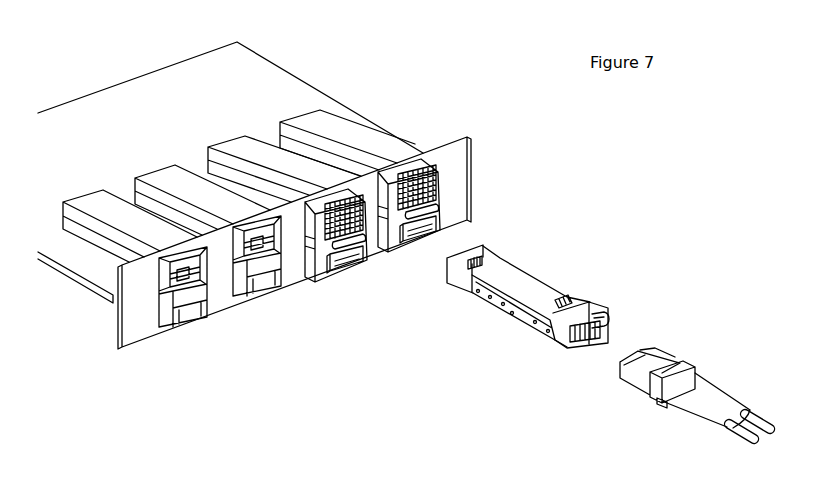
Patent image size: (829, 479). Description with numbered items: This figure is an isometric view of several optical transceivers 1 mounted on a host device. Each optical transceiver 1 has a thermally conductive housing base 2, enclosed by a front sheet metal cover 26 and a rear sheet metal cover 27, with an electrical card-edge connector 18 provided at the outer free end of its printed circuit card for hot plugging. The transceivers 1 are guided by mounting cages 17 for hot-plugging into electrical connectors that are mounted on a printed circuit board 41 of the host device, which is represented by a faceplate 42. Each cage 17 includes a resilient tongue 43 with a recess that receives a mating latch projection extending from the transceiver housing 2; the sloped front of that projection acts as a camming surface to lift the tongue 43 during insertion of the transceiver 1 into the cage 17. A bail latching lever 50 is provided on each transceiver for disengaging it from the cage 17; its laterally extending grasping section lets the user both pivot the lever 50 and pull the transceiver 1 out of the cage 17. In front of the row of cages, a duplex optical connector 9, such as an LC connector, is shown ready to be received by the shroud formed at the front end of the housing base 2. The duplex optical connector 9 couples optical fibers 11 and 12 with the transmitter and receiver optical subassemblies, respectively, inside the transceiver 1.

The optical transceiver 1 is at (331, 272).
The housing base 2 is at (575, 326).
The duplex optical connector 9 is at (668, 362).
The optical fiber 11 is at (727, 424).
The optical fiber 12 is at (758, 418).
The mounting cage 17 is at (138, 172).
The electrical card-edge connector 18 is at (467, 255).
The front sheet metal cover 26 is at (527, 317).
The rear sheet metal cover 27 is at (493, 290).
The printed circuit board 41 is at (180, 128).
The faceplate 42 is at (128, 328).
The resilient tongue 43 is at (205, 292).
The bail latching lever 50 is at (607, 315).